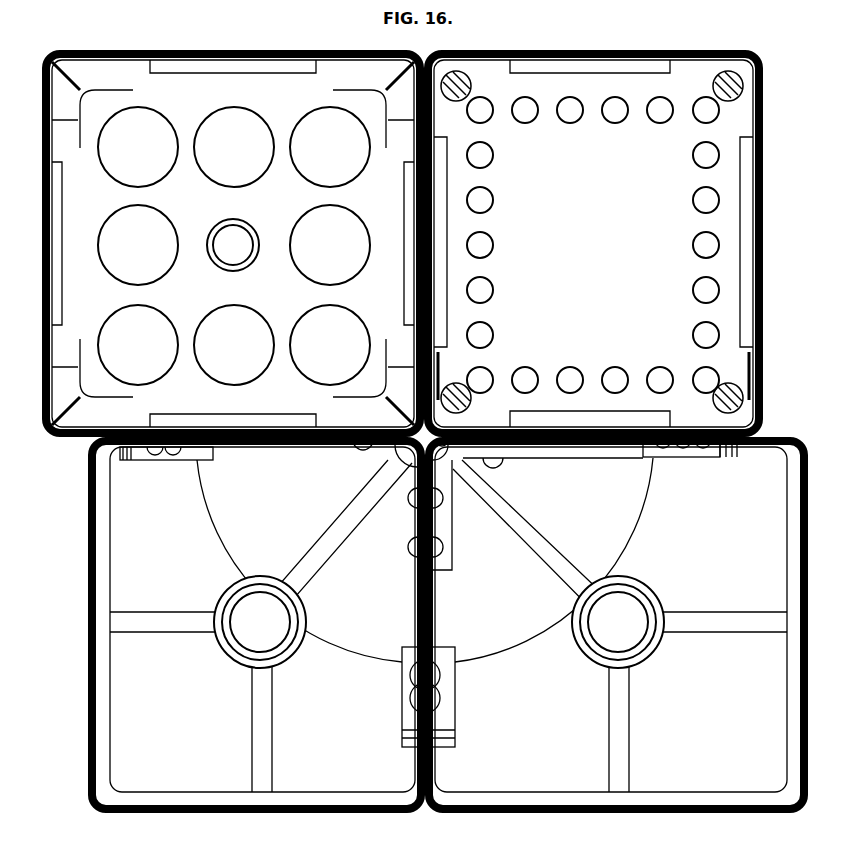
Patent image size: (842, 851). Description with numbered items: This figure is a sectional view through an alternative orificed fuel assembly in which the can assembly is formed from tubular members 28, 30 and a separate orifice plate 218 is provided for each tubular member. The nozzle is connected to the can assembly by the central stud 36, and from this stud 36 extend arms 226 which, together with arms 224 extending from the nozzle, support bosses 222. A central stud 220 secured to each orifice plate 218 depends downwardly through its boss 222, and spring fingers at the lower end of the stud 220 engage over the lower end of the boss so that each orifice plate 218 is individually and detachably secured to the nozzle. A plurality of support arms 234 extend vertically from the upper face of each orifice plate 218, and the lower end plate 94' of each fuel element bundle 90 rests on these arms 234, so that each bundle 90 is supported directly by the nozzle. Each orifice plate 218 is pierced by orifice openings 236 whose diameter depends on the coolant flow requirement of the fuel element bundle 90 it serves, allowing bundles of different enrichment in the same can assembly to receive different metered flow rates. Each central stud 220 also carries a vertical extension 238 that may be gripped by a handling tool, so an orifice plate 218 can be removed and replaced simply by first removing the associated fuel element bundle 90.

The tubular member 28 is at (700, 50).
The tubular member 30 is at (46, 318).
The central stud 36 is at (412, 474).
The fuel element bundle 90 is at (742, 306).
The lower end plate 94' is at (622, 242).
The orifice plate 218 is at (67, 276).
The central stud 220 is at (231, 230).
The boss 222 is at (232, 594).
The arm 224 is at (222, 666).
The arm 226 is at (326, 526).
The support arm 234 is at (98, 78).
The orifice opening 236 is at (334, 172).
The vertical extension 238 is at (240, 268).